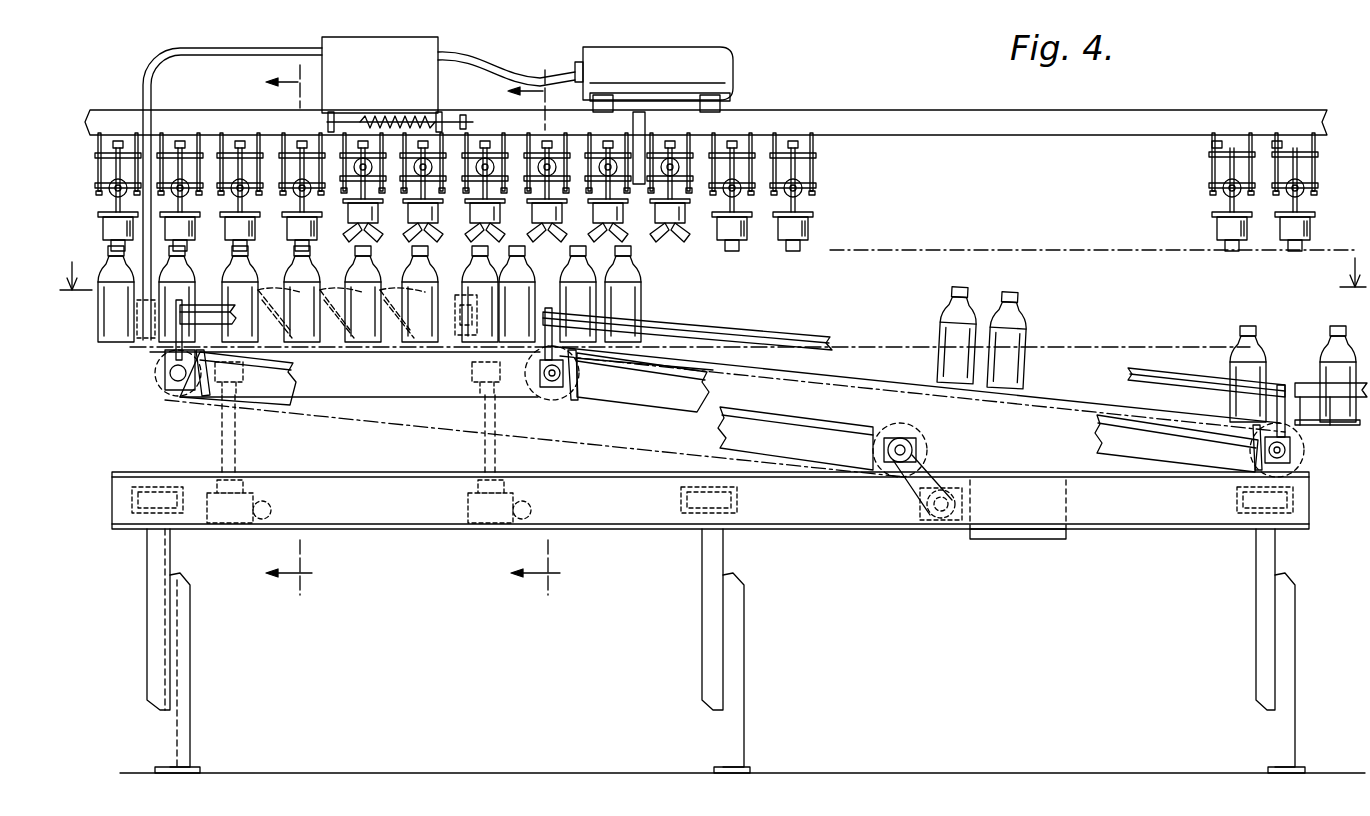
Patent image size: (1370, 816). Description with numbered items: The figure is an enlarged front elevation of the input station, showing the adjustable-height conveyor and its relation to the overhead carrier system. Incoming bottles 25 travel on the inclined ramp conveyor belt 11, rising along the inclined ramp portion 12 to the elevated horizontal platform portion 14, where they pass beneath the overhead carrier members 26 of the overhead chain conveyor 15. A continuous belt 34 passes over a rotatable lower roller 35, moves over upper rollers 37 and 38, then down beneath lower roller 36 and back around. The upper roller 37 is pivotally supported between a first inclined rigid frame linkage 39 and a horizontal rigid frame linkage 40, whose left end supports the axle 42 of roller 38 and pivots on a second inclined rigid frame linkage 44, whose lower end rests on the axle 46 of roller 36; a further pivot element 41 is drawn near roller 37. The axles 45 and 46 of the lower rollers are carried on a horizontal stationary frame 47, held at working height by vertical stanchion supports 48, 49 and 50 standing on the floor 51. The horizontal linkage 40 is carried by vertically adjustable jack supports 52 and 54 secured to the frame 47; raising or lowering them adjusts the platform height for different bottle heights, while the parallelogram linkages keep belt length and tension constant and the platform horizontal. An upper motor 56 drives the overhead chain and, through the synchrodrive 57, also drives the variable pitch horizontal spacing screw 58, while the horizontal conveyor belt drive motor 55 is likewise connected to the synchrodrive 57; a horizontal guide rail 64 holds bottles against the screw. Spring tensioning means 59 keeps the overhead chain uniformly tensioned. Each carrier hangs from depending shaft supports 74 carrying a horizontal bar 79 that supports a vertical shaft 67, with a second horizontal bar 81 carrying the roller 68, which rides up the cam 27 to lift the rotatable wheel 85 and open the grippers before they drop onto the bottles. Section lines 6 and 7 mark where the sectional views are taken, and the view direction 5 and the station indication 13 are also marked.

The section line 5 is at (713, 287).
The section line 6— 6 is at (282, 335).
The section line 7— 7 is at (525, 337).
The inclined ramp conveyor belt 11 is at (1060, 382).
The inclined ramp portion 12 is at (893, 335).
The capping head assembly 13 is at (790, 100).
The horizontal platform portion 14 is at (333, 356).
The overhead chain conveyor 15 is at (1000, 112).
The bottle 25 is at (1316, 328).
The overhead carrier member 26 is at (828, 238).
The cam 27 is at (436, 292).
The continuous belt 34 is at (846, 352).
The lower roller 35 is at (1302, 446).
The lower roller 36 is at (785, 240).
The upper roller 37 is at (553, 393).
The upper roller 38 is at (152, 375).
The first inclined rigid frame linkage 39 is at (663, 392).
The horizontal rigid frame linkage 40 is at (432, 382).
The pivot arm 41 is at (563, 375).
The axle 42 is at (178, 390).
The second inclined rigid frame linkage 44 is at (262, 392).
The axle 45 is at (1295, 462).
The axle 46 is at (920, 430).
The horizontal stationary frame 47 is at (862, 518).
The vertical stanchion support 48 is at (1287, 640).
The vertical stanchion support 49 is at (735, 648).
The vertical stanchion support 50 is at (185, 670).
The floor 51 is at (1055, 772).
The vertically adjustable jack support 52 is at (486, 452).
The vertically adjustable jack support 54 is at (222, 452).
The horizontal conveyor belt drive motor 55 is at (1025, 532).
The upper motor 56 is at (700, 60).
The synchrodrive 57 is at (440, 44).
The variable pitch horizontal spacing screw 58 is at (318, 284).
The spring tensioning means 59 is at (420, 116).
The horizontal guide rail 64 is at (207, 302).
The vertical shaft 67 is at (810, 168).
The roller 68 is at (810, 192).
The depending shaft support 74 is at (815, 147).
The horizontal bar 79 is at (800, 152).
The second horizontal bar 81 is at (818, 184).
The rotatable wheel 85 is at (815, 215).